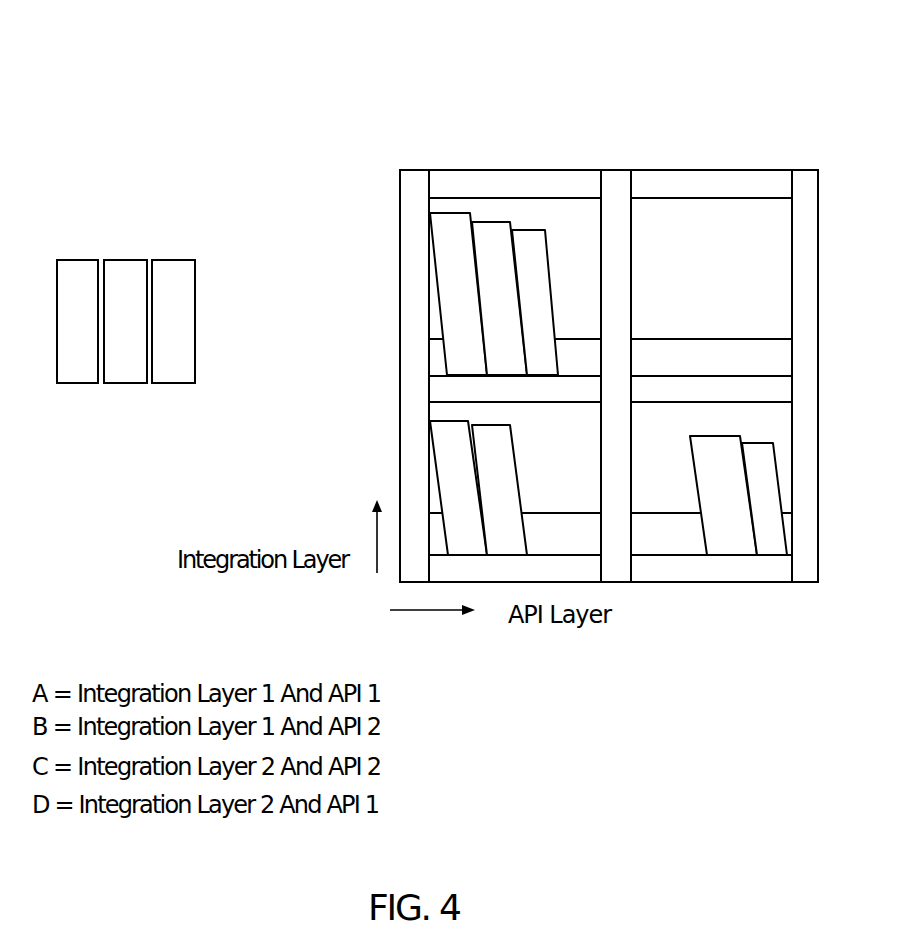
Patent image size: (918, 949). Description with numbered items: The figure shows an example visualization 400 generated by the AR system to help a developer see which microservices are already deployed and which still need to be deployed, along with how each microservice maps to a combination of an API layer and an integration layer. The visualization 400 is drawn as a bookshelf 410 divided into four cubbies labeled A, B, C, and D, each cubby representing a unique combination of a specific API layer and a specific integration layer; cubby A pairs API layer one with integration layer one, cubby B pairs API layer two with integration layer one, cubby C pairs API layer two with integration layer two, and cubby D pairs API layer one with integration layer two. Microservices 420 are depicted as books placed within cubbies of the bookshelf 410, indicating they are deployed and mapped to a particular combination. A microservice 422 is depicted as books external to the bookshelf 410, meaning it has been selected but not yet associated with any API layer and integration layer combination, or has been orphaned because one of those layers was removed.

The visualization 400 is at (135, 57).
The bookshelf 410 is at (615, 170).
The microservice 420 is at (493, 286).
The microservice 422 is at (126, 260).